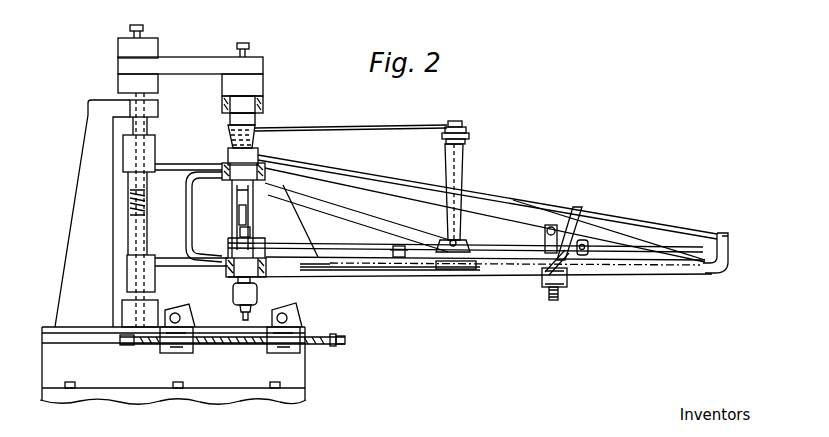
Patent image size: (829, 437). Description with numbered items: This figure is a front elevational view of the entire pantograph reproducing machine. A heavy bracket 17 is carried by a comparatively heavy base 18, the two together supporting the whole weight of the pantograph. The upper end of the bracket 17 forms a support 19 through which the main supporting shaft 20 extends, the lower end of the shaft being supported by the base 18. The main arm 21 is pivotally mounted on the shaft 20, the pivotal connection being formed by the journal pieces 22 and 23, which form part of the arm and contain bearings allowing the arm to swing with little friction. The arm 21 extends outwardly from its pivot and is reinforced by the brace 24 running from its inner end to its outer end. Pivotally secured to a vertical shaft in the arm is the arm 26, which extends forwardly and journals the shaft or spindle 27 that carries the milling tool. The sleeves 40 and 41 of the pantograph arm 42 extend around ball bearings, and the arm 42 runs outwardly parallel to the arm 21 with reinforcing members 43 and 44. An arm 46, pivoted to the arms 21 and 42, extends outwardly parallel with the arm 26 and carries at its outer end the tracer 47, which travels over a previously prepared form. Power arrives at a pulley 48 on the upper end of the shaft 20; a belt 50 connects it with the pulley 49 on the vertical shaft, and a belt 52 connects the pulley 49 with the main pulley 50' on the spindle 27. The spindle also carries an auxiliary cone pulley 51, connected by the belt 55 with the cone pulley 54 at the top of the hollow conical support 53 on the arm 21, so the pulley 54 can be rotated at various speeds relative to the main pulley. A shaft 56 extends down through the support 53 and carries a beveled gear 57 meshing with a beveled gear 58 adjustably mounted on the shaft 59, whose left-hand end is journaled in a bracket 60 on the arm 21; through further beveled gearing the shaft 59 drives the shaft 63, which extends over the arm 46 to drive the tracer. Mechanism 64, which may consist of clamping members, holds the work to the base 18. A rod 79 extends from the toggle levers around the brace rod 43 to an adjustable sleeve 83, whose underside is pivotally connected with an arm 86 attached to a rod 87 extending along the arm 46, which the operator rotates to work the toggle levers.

The bracket 17 is at (97, 136).
The base 18 is at (128, 382).
The support 19 is at (158, 106).
The main supporting shaft 20 is at (148, 126).
The main arm 21 is at (190, 164).
The journal piece 22 is at (155, 286).
The journal piece 23 is at (155, 146).
The brace 24 is at (512, 218).
The arm 26 is at (221, 214).
The shaft or spindle 27 is at (258, 148).
The sleeve 40 is at (229, 164).
The sleeve 41 is at (226, 266).
The pantograph arm 42 is at (520, 270).
The reinforcing member (brace rod) 43 is at (300, 224).
The reinforcing member 44 is at (652, 224).
The arm 46 is at (567, 283).
The tracer 47 is at (558, 300).
The pulley 48 is at (155, 45).
The pulley 49 is at (263, 82).
The belt 50 is at (190, 64).
The main pulley 50' is at (265, 122).
The auxiliary cone pulley 51 is at (262, 128).
The belt 52 is at (229, 109).
The hollow conical support 53 is at (463, 173).
The cone pulley 54 is at (470, 141).
The belt 55 is at (370, 128).
The shaft 56 is at (448, 161).
The beveled gear 57 is at (466, 241).
The beveled gear 58 is at (453, 270).
The shaft 59 is at (414, 272).
The bracket 60 is at (394, 251).
The shaft 63 is at (553, 224).
The work-holding mechanism 64 is at (191, 351).
The rod 79 is at (368, 215).
The adjustable sleeve 83 is at (603, 221).
The arm 86 is at (589, 256).
The rod 87 is at (545, 274).